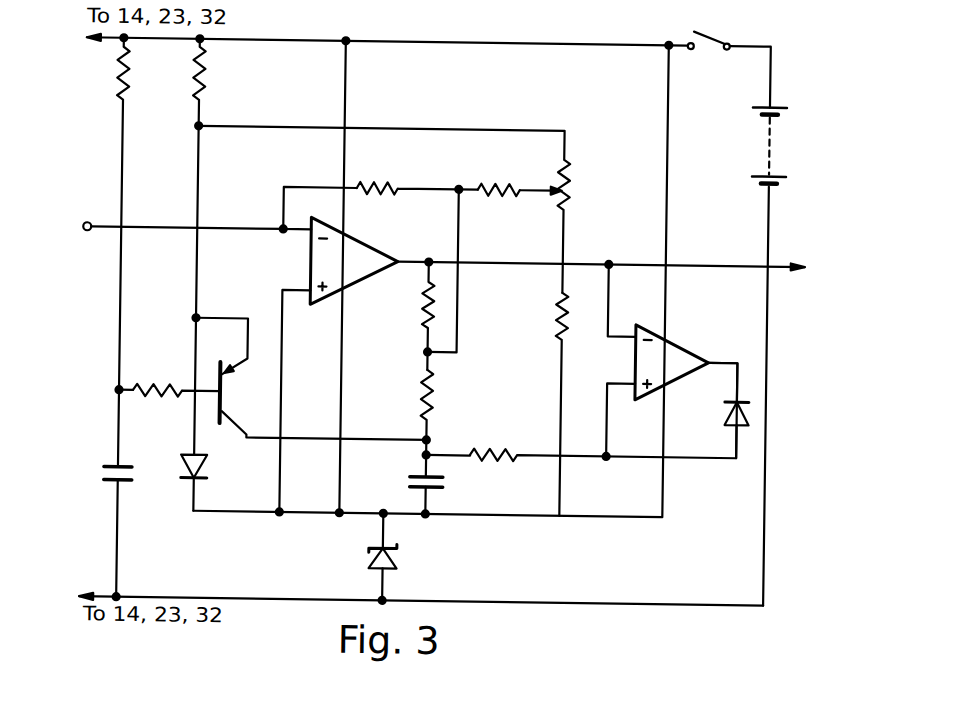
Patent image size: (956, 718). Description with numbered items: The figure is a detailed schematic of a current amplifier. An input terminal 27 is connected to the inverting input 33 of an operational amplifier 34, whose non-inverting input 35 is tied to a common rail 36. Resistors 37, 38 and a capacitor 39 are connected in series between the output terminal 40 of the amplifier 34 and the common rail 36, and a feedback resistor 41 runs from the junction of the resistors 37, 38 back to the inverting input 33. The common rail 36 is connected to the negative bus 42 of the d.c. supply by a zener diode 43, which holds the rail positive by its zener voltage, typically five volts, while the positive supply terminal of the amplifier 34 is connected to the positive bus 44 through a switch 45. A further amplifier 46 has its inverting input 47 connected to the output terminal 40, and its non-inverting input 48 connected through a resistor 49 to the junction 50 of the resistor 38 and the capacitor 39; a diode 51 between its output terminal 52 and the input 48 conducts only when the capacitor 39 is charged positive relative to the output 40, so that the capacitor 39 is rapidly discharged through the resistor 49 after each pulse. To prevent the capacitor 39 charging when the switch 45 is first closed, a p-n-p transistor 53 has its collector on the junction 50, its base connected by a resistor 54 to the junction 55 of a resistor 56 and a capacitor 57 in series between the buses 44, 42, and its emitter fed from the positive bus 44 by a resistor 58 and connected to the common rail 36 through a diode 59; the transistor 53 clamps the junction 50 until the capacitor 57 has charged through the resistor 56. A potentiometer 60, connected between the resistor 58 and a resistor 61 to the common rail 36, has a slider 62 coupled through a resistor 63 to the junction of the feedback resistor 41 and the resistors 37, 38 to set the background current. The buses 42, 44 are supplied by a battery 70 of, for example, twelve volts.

The terminal 27 is at (87, 222).
The inverting input 33 is at (306, 237).
The operational amplifier 34 is at (349, 276).
The non-inverting input 35 is at (310, 299).
The common rail 36 is at (306, 517).
The resistor 37 is at (408, 315).
The resistor 38 is at (407, 423).
The capacitor 39 is at (407, 490).
The output terminal 40 is at (397, 262).
The feedback resistor 41 is at (417, 254).
The negative bus 42 is at (497, 599).
The zener diode 43 is at (404, 557).
The positive bus 44 is at (508, 42).
The switch 45 is at (701, 59).
The further amplifier 46 is at (678, 357).
The inverting input 47 is at (633, 338).
The non-inverting input 48 is at (636, 385).
The resistor 49 is at (603, 412).
The junction 50 is at (432, 453).
The diode 51 is at (753, 409).
The output terminal 52 is at (711, 358).
The p-n-p transistor 53 is at (311, 379).
The resistor 54 is at (176, 407).
The junction 55 is at (125, 390).
The resistor 56 is at (139, 214).
The capacitor 57 is at (105, 493).
The resistor 58 is at (216, 247).
The diode 59 is at (212, 483).
The potentiometer 60 is at (402, 210).
The resistor 61 is at (544, 404).
The slider 62 is at (553, 193).
The resistor 63 is at (499, 174).
The battery 70 is at (749, 356).